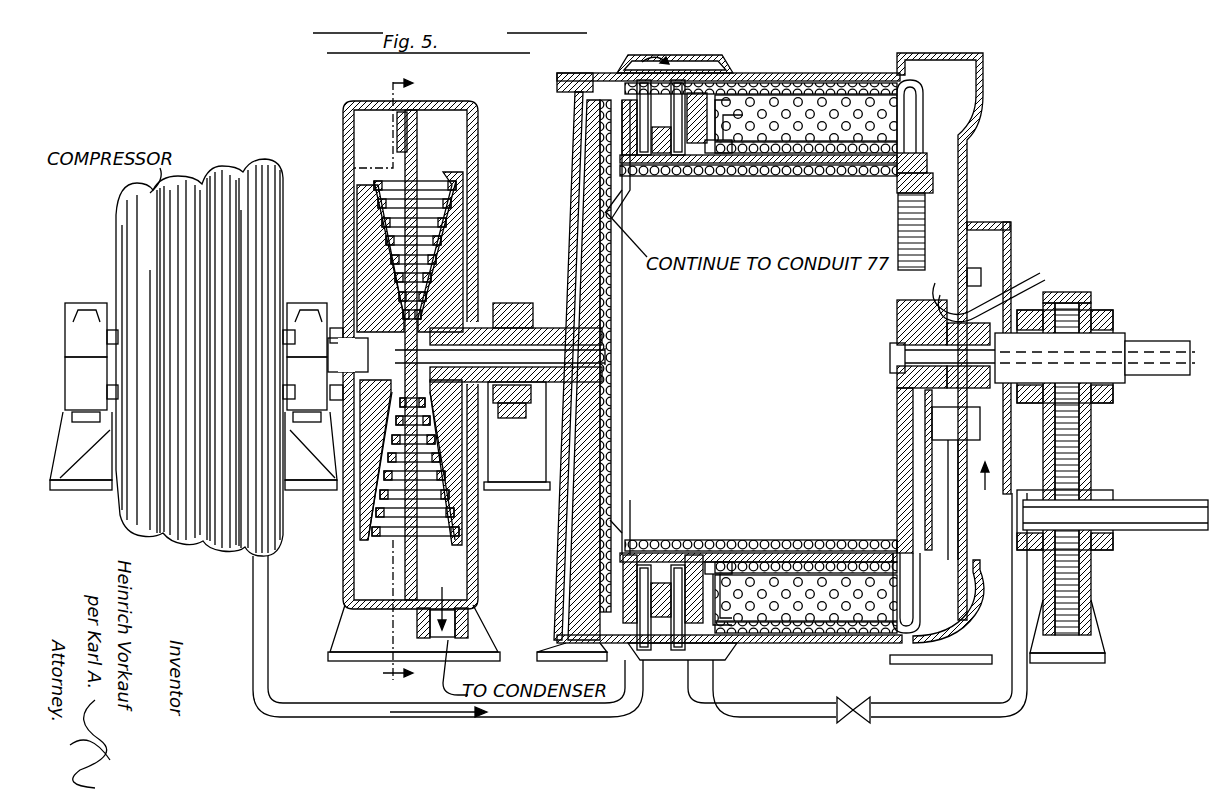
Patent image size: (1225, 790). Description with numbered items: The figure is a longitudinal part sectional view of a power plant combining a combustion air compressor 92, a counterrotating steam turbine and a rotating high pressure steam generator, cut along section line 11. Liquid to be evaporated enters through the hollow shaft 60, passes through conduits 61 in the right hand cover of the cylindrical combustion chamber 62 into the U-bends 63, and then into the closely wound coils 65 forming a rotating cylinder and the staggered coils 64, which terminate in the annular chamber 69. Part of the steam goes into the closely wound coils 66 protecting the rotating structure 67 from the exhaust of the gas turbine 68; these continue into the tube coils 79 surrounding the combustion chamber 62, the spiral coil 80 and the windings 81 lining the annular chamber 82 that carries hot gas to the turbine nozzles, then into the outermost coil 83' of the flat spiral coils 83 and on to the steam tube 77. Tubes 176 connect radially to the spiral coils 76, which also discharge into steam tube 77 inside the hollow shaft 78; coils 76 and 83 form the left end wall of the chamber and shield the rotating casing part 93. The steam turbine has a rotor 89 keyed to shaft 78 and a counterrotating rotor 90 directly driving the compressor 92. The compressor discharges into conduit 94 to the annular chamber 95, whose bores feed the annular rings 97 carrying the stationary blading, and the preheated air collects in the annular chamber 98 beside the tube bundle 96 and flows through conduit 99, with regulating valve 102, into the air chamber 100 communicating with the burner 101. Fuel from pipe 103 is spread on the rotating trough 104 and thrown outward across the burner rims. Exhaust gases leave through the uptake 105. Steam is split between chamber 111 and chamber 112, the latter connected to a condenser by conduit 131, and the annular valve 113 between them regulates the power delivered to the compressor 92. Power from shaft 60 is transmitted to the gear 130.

The compressor 92 is at (175, 188).
The counterrotating rotor 90 is at (370, 245).
The rotor 89 is at (448, 257).
The annular valve 113 is at (397, 127).
The section line 11 is at (396, 381).
The chamber 111 is at (374, 475).
The chamber 112 is at (415, 475).
The conduit 131 is at (445, 623).
The steam tube 77 is at (585, 357).
The rotating casing part 93 is at (587, 447).
The spiral coils 76 is at (605, 418).
The hollow shaft 78 is at (513, 430).
The cylindrical combustion chamber 62 is at (729, 358).
The spiral coil 80 is at (583, 572).
The flat spiral coils 83 is at (609, 370).
The outermost coil 83' is at (562, 362).
The tubes 176 is at (625, 193).
The annular chamber 82 is at (620, 533).
The annular chamber 98 is at (707, 70).
The tube bundle 96 is at (780, 88).
The annular chamber 95 is at (648, 78).
The annular rings 97 is at (676, 160).
The annular chamber 69 is at (716, 153).
The uptake 105 is at (940, 73).
The trough 104 is at (900, 298).
The burner 101 is at (898, 230).
The air chamber 100 is at (982, 252).
The pipe 103 is at (1038, 272).
The hollow shaft 60 is at (923, 360).
The conduits 61 is at (925, 557).
The U-bends 63 is at (918, 607).
The tube coils 79 is at (743, 563).
The closely wound coils 66 is at (803, 567).
The staggered coils 64 is at (837, 590).
The closely wound coils 65 is at (865, 637).
The rotating structure 67 is at (845, 560).
The turbine 68 is at (662, 602).
The windings 81 is at (583, 657).
The conduit 94 is at (358, 713).
The conduit 99 is at (797, 710).
The regulating valve 102 is at (855, 718).
The gear 130 is at (1083, 440).